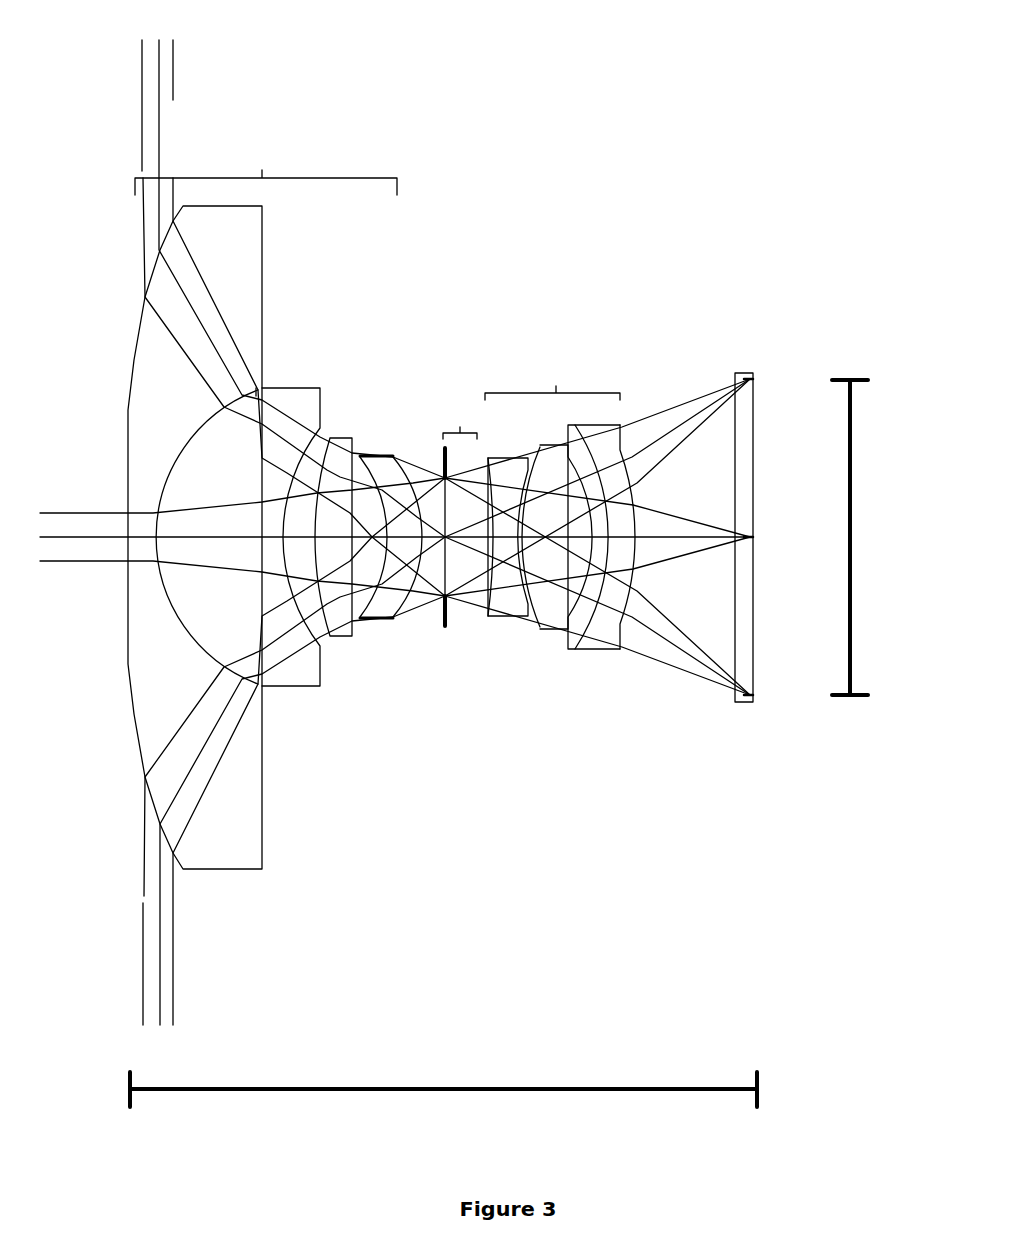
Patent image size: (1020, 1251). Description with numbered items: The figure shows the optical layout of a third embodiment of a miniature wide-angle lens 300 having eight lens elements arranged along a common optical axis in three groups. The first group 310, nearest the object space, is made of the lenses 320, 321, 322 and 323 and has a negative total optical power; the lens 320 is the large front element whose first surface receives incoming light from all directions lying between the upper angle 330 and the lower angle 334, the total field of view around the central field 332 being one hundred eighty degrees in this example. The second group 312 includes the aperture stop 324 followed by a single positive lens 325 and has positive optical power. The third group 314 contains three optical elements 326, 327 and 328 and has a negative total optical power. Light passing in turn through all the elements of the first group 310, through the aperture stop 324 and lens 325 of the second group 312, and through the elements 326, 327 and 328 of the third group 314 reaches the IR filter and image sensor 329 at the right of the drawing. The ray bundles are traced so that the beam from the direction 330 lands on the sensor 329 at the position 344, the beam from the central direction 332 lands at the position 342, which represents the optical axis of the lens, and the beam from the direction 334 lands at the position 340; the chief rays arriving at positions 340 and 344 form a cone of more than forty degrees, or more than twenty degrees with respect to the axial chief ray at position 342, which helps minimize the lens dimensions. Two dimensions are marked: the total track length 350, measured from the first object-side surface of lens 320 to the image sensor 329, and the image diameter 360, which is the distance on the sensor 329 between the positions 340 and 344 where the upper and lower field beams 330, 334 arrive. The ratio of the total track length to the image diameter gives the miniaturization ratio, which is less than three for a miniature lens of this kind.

The miniature wide-angle lens 300 is at (396, 293).
The first group 310 is at (266, 168).
The second group 312 is at (460, 418).
The third group 314 is at (552, 380).
The lens 320 is at (195, 552).
The lens 321 is at (288, 551).
The lens 322 is at (339, 551).
The lens 323 is at (390, 550).
The aperture stop 324 is at (443, 622).
The positive lens 325 is at (487, 564).
The optical element 326 is at (540, 544).
The optical element 327 is at (576, 560).
The optical element 328 is at (607, 575).
The IR filter and image sensor 329 is at (747, 556).
The upper angle 330 is at (443, 351).
The central field 332 is at (388, 537).
The lower angle 334 is at (444, 717).
The position 340 is at (770, 377).
The position 342 is at (770, 537).
The position 344 is at (770, 695).
The total track length 350 is at (443, 1100).
The image diameter 360 is at (864, 537).